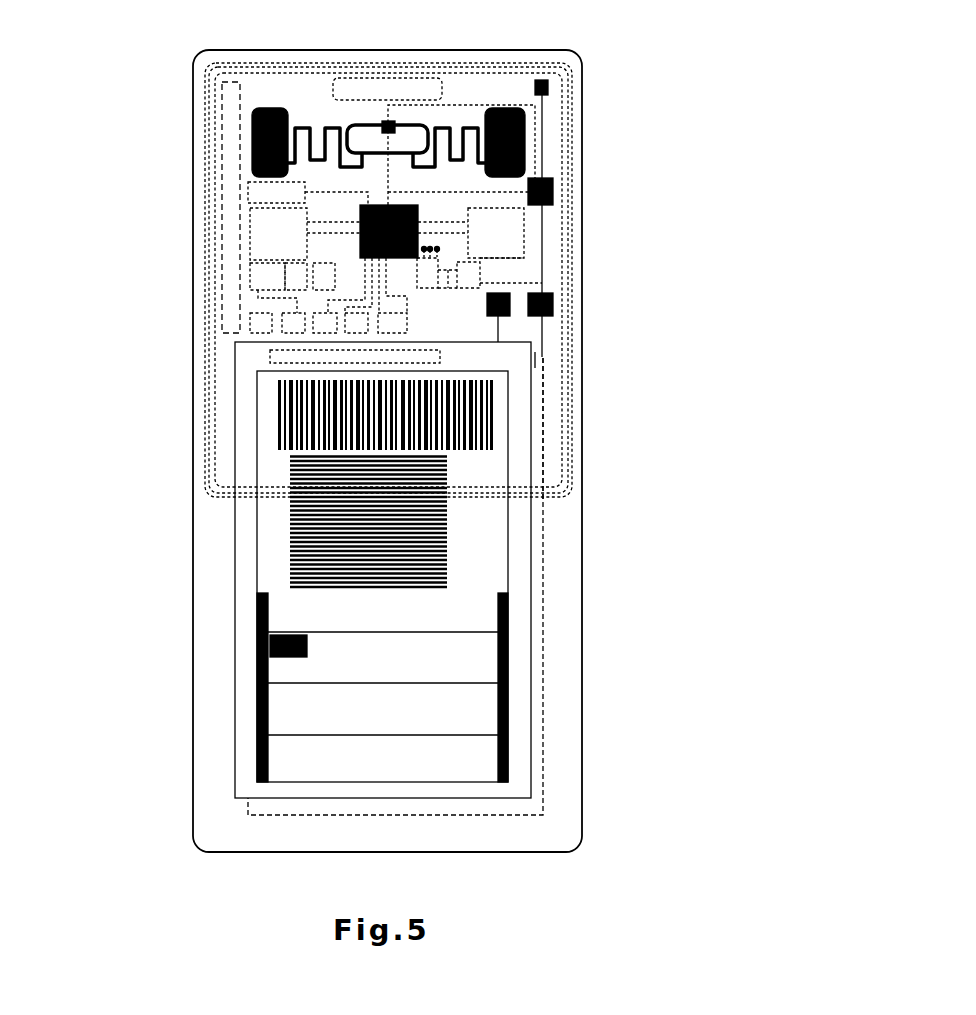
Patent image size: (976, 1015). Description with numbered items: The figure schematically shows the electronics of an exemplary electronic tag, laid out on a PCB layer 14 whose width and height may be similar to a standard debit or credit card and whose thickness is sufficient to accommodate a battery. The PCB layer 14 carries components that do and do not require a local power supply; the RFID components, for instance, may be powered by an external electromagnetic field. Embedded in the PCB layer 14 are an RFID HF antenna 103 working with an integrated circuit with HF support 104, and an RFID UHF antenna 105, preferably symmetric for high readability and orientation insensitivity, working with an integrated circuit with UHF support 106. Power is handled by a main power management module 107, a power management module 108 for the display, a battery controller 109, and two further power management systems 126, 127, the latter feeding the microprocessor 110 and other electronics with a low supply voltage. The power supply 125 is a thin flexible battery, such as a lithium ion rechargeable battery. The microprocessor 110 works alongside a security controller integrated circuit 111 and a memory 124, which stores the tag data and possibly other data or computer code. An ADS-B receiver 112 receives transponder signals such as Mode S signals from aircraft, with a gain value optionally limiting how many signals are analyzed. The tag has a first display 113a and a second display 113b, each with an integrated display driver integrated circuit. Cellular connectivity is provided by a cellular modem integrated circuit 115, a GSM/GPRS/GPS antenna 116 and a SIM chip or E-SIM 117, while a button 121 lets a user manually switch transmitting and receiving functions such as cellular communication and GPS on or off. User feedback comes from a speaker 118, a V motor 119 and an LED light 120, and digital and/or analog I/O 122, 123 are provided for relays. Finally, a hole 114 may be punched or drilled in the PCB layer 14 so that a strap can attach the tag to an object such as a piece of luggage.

The PCB layer 14 is at (188, 94).
The RFID HF antenna 103 is at (277, 55).
The integrated circuit with HF support 104 is at (540, 77).
The RFID UHF antenna 105 is at (467, 118).
The integrated circuit with UHF support 106 is at (388, 119).
The main power management module 107 is at (558, 192).
The power management module for the display 108 is at (500, 288).
The battery controller 109 is at (543, 288).
The microprocessor 110 is at (420, 210).
The security controller integrated circuit 111 is at (537, 352).
The ADS-B receiver 112 is at (530, 232).
The first display 113a is at (524, 403).
The second display 113b is at (537, 427).
The hole 114 is at (358, 81).
The cellular modem integrated circuit 115 is at (256, 220).
The GSM/GPRS/GPS antenna 116 is at (223, 172).
The SIM chip or E-SIM 117 is at (256, 278).
The speaker 118 is at (310, 278).
The V motor 119 is at (280, 278).
The LED light 120 is at (248, 193).
The button 121 is at (256, 313).
The digital and/or analog I/O 122 is at (293, 339).
The digital and/or analog I/O 123 is at (323, 339).
The memory 124 is at (357, 339).
The power supply 125 is at (390, 339).
The power management system 126 is at (468, 289).
The power management system 127 is at (428, 289).